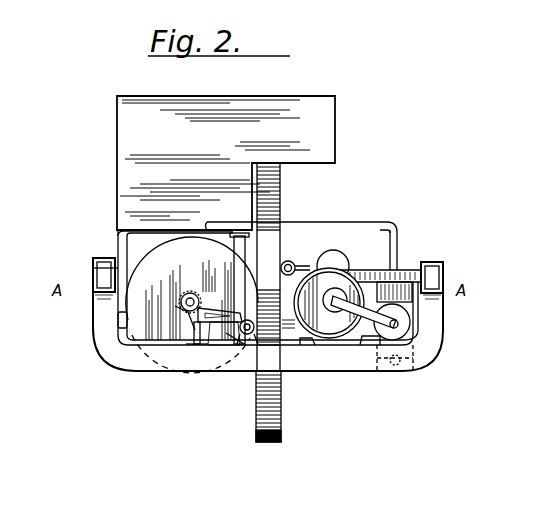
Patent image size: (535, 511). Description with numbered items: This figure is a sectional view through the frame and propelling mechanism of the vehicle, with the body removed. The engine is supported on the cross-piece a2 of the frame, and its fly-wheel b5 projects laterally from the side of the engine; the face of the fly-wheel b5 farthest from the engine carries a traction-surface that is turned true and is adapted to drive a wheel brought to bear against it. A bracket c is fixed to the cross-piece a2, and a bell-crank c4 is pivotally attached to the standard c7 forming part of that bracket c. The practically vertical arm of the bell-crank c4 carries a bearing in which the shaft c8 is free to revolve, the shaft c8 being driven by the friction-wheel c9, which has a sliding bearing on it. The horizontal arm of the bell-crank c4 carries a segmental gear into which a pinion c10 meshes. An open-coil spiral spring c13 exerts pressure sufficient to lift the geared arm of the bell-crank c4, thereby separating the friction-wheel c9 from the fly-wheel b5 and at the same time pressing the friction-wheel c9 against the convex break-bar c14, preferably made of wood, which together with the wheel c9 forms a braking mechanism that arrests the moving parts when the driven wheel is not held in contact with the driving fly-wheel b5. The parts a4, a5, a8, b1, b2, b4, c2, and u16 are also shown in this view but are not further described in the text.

The cross-piece a2 is at (357, 363).
The side block a4 is at (444, 272).
The side block a5 is at (93, 263).
The shaft a8 is at (404, 270).
The block b1 is at (226, 163).
The cover plate b2 is at (380, 213).
The ring b4 is at (318, 264).
The fly-wheel b5 is at (283, 207).
The bracket c is at (240, 349).
The arm c2 is at (215, 308).
The bell-crank c4 is at (177, 314).
The standard c7 is at (194, 332).
The shaft c8 is at (192, 292).
The friction-wheel c9 is at (192, 305).
The pinion c10 is at (252, 336).
The open-coil spiral spring c13 is at (226, 346).
The convex break-bar c14 is at (118, 323).
The pillar u16 is at (245, 243).